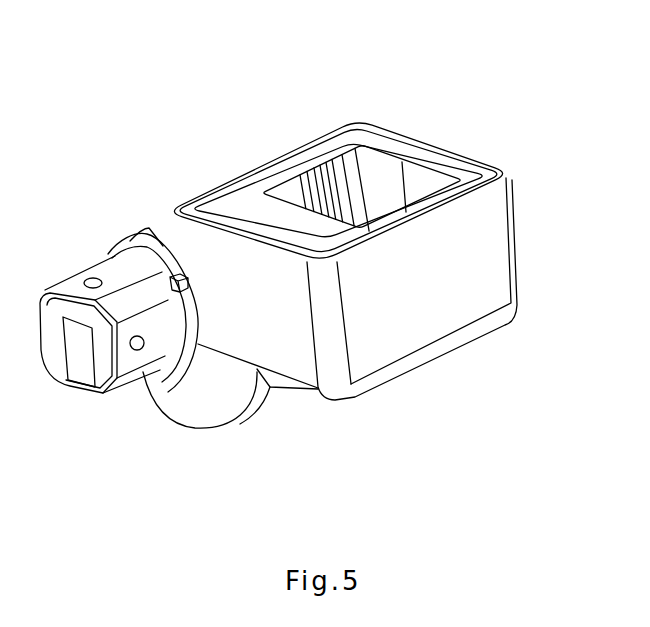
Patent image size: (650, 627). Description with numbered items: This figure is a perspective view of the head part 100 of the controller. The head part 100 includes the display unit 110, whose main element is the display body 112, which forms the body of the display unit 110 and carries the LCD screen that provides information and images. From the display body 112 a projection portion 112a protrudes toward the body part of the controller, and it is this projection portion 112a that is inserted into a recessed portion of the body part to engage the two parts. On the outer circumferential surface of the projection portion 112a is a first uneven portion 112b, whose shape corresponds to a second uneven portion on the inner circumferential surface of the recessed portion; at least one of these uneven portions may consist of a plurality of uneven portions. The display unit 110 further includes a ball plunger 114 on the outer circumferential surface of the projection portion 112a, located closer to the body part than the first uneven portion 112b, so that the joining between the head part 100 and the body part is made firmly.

The head part 100 is at (94, 31).
The display unit 110 is at (344, 108).
The display body 112 is at (418, 158).
The projection portion 112a is at (83, 392).
The first uneven portion 112b is at (150, 228).
The ball plunger 114 is at (140, 350).